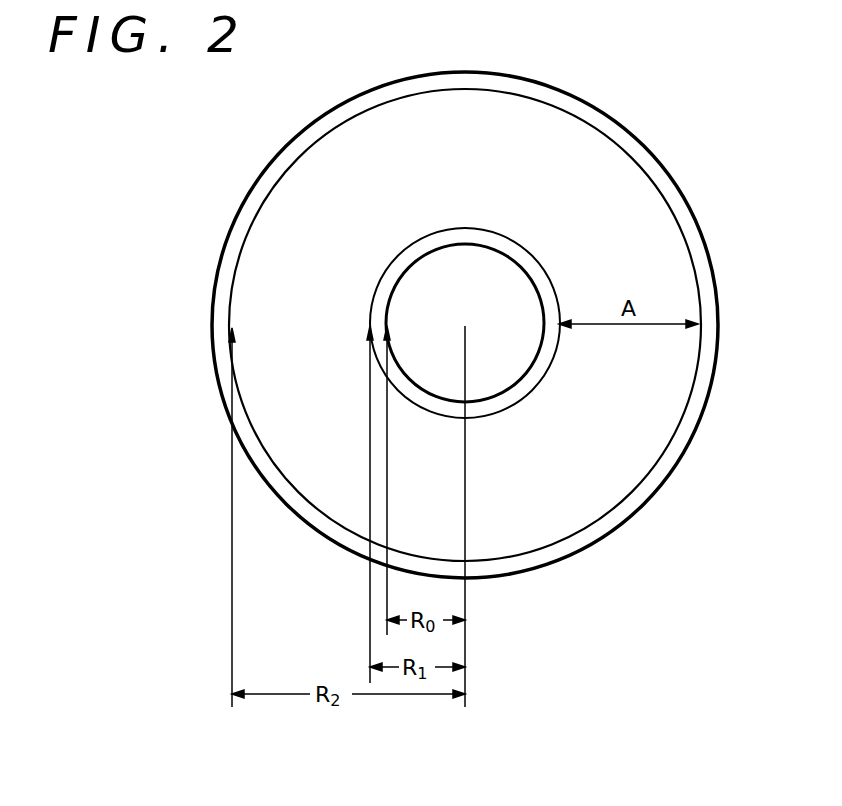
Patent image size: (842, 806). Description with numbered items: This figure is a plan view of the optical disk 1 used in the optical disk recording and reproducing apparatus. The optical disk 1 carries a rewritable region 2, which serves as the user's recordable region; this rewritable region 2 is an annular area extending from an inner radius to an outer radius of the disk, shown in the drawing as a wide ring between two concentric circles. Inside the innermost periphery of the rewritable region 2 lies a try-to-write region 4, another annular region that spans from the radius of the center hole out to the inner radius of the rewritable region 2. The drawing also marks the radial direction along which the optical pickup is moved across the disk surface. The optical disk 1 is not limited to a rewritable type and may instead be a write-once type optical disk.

The optical disk 1 is at (467, 70).
The rewritable region 2 is at (586, 150).
The try-to-write region 4 is at (557, 313).